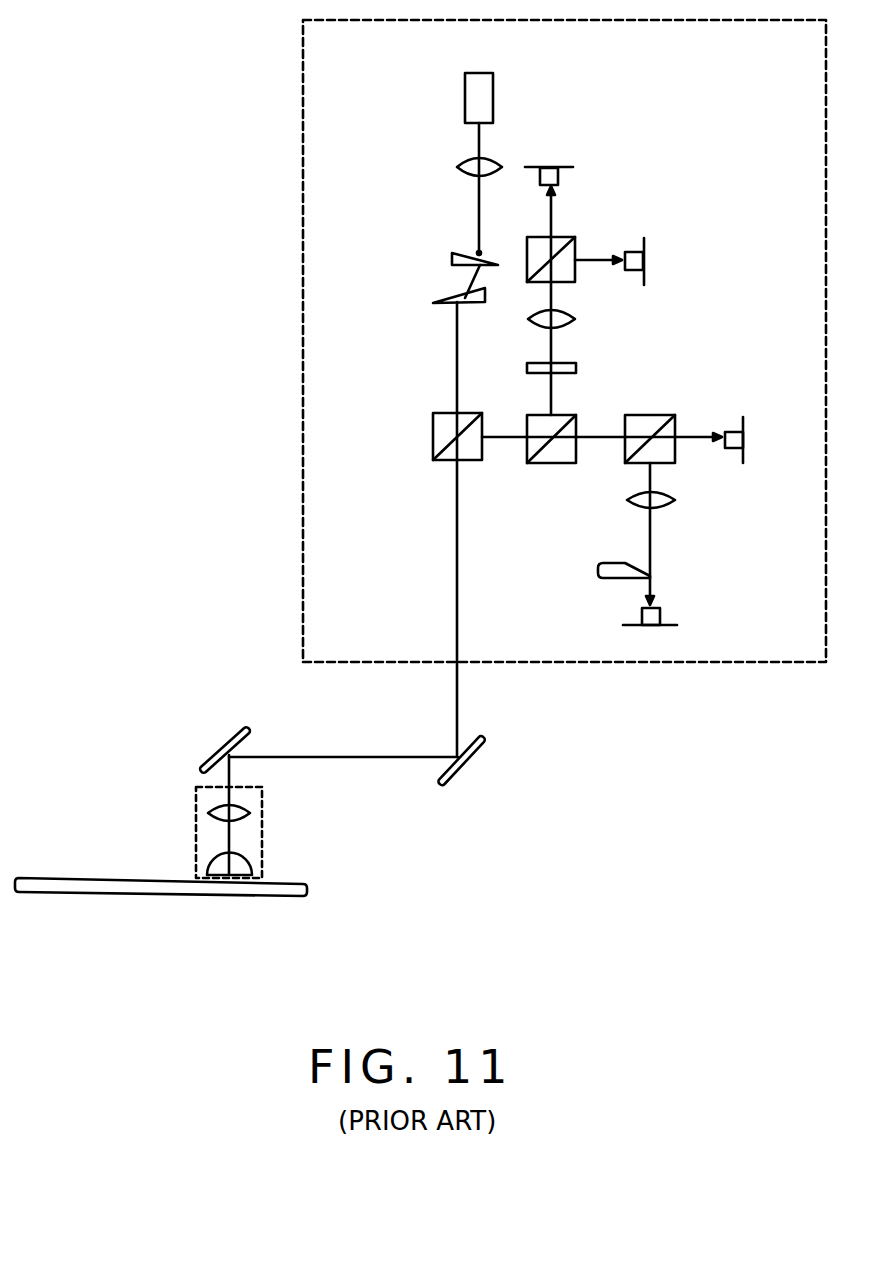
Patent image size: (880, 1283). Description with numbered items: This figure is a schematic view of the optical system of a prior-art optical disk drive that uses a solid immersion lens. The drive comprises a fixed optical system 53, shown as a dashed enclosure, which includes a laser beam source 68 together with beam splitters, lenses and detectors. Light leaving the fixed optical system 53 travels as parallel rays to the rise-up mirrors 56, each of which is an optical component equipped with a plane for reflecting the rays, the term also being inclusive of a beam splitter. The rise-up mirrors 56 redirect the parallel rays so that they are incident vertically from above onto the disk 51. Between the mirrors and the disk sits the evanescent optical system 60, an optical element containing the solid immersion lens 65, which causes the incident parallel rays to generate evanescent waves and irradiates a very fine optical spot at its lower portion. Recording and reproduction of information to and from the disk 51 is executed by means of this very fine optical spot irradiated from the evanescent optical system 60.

The disk 51 is at (307, 890).
The fixed optical system 53 is at (300, 236).
The rise-up mirror 56 is at (460, 774).
The evanescent optical system 60 is at (264, 815).
The solid immersion lens 65 is at (250, 861).
The laser beam source 68 is at (493, 96).